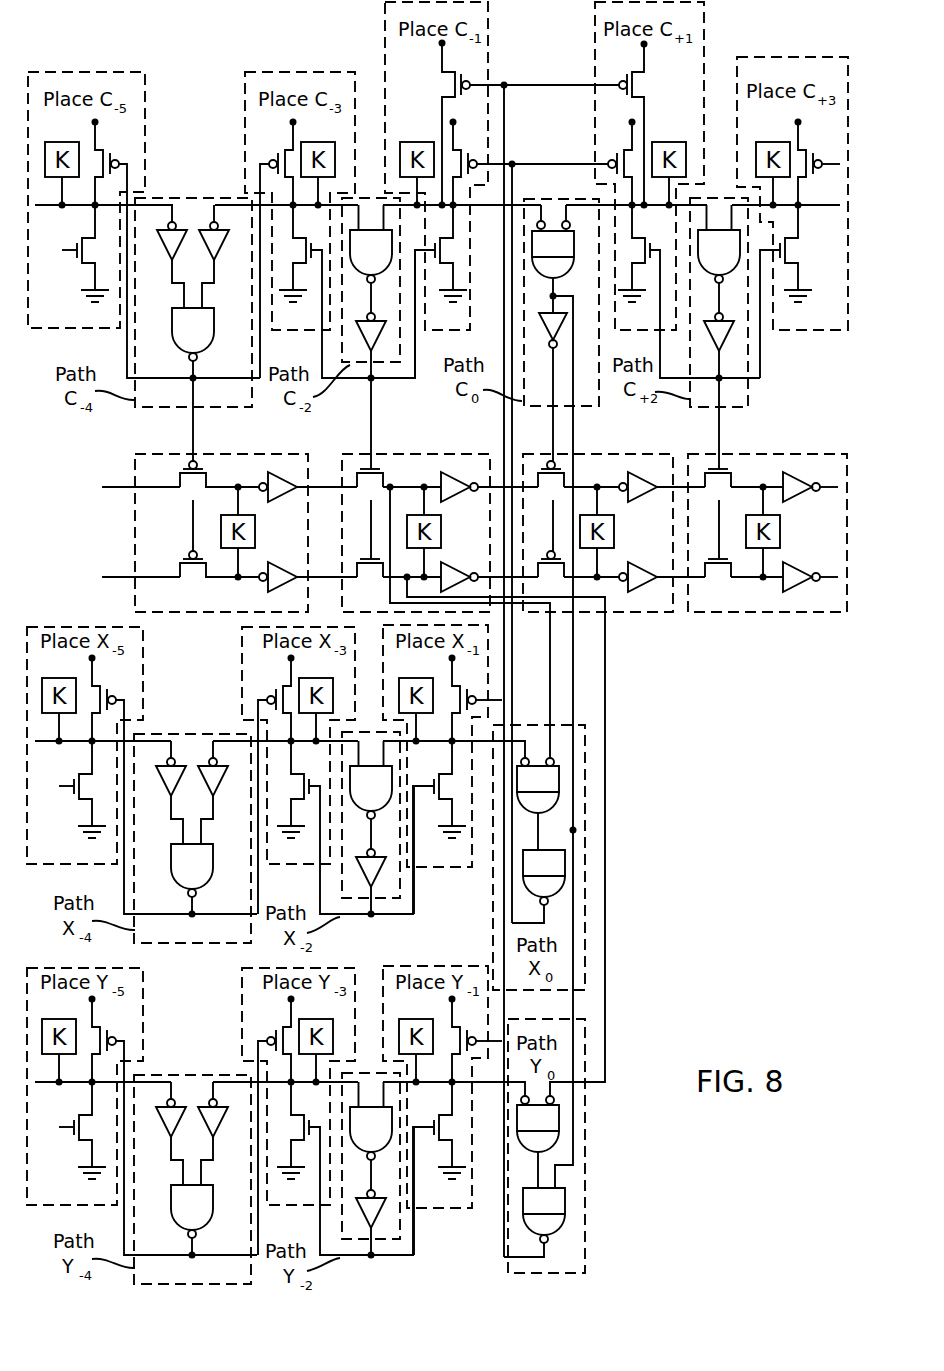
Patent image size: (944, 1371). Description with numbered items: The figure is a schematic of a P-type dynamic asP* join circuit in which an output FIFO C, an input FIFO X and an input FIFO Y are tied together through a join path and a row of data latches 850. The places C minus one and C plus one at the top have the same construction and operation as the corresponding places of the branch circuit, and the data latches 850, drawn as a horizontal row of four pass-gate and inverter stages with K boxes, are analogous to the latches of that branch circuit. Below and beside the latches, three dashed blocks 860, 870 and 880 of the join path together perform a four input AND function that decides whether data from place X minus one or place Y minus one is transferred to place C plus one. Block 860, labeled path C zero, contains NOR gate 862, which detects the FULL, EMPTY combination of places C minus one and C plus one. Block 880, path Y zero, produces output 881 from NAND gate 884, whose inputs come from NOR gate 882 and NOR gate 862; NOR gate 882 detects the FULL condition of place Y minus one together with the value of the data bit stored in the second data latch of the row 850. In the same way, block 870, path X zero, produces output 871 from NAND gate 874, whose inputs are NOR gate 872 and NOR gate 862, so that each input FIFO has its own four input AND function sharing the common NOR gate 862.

The data latches 850 is at (135, 530).
The block of join path 860 is at (597, 693).
The NOR gate 862 is at (553, 249).
The block of join path (path X0) 870 is at (581, 857).
The output of path X0 871 is at (547, 920).
The NOR gate 872 is at (538, 785).
The NAND gate 874 is at (544, 877).
The block of join path (path Y0) 880 is at (587, 1146).
The output of path Y0 881 is at (547, 1253).
The NOR gate 882 is at (538, 1124).
The NAND gate 884 is at (544, 1215).